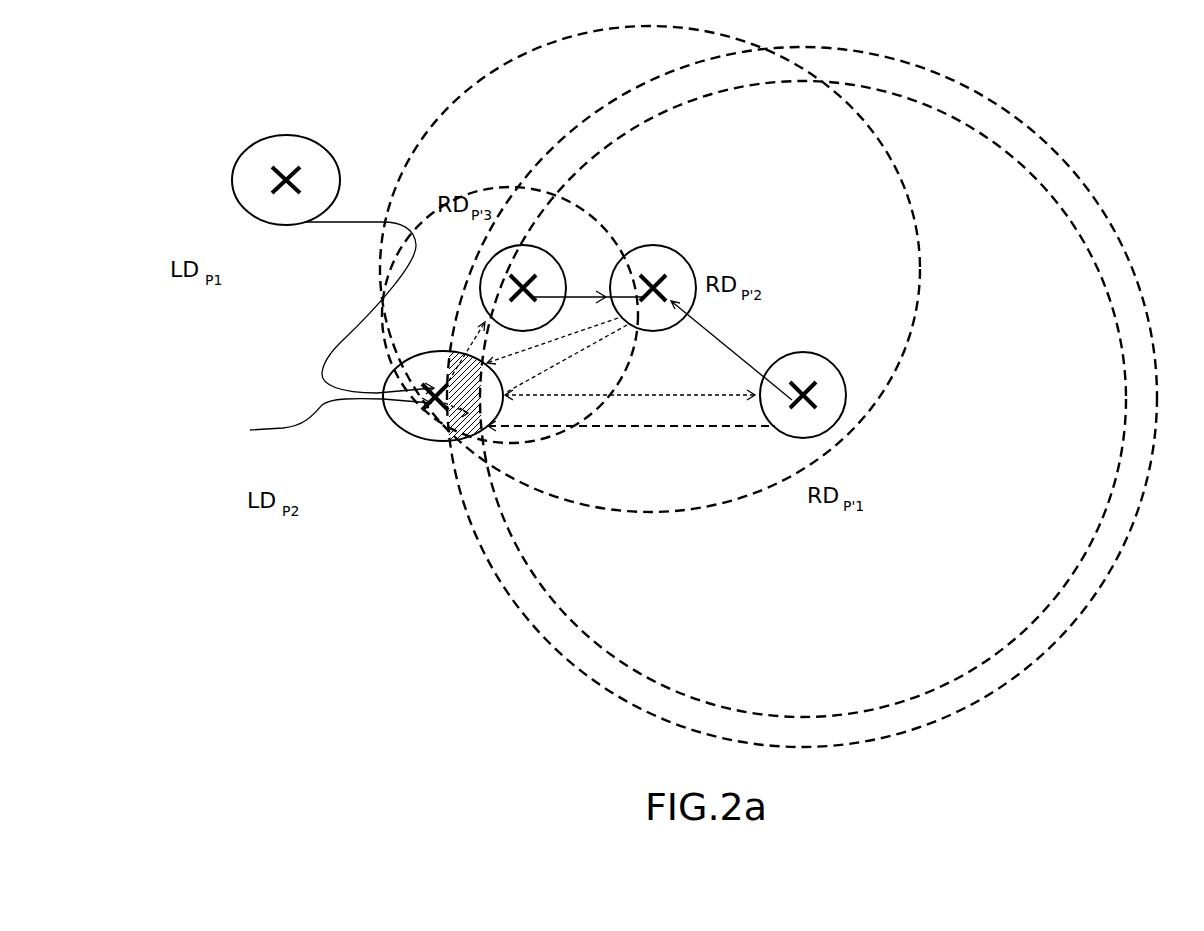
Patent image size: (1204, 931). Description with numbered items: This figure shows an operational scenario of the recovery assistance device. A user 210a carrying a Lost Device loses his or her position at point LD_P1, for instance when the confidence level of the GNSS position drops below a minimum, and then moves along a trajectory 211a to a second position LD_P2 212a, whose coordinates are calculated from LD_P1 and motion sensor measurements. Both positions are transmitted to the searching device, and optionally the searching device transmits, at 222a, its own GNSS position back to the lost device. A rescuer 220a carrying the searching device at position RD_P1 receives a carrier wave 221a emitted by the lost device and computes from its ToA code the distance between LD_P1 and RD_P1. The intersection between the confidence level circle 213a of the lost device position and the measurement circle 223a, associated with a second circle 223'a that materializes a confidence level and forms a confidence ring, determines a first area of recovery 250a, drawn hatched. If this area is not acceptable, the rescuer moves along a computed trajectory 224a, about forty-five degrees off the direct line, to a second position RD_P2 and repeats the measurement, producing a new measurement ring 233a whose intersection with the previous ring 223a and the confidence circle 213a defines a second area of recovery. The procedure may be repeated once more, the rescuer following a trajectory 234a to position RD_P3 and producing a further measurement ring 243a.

The user 210a is at (277, 187).
The trajectory 211a is at (320, 367).
The position LD_P2 212a is at (309, 422).
The confidence level circle 213a is at (397, 427).
The rescuer 220a is at (815, 401).
The carrier wave 221a is at (707, 400).
The transmission of GNSS position 222a is at (607, 427).
The measurement circle 223a is at (1020, 664).
The second circle 223'a is at (803, 399).
The trajectory 224a is at (738, 351).
The new measurement ring 233a is at (863, 120).
The trajectory 234a is at (567, 277).
The measurement ring 243a is at (573, 200).
The first area of recovery 250a is at (452, 438).